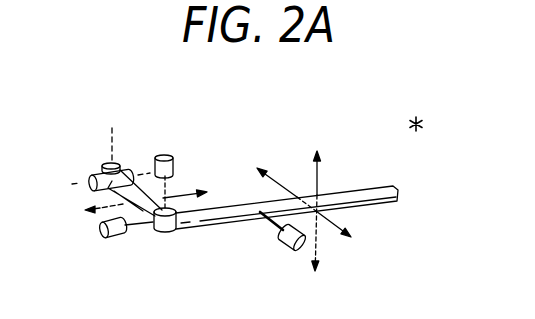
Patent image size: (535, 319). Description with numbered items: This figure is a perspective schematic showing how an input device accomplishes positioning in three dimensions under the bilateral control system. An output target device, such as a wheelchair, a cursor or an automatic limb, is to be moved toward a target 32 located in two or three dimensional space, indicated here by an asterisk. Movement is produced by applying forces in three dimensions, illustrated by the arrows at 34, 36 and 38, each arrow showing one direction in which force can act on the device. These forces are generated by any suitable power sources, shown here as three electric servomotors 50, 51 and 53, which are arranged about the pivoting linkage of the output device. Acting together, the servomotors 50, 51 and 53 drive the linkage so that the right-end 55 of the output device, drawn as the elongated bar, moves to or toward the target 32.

The target 32 is at (419, 117).
The arrow indicating force direction 34 is at (95, 209).
The arrow indicating force direction 36 is at (280, 185).
The arrow indicating force direction 38 is at (317, 178).
The electric servomotor 50 is at (282, 245).
The electric servomotor 51 is at (173, 160).
The electric servomotor 53 is at (117, 236).
The right-end of the output device 55 is at (358, 187).